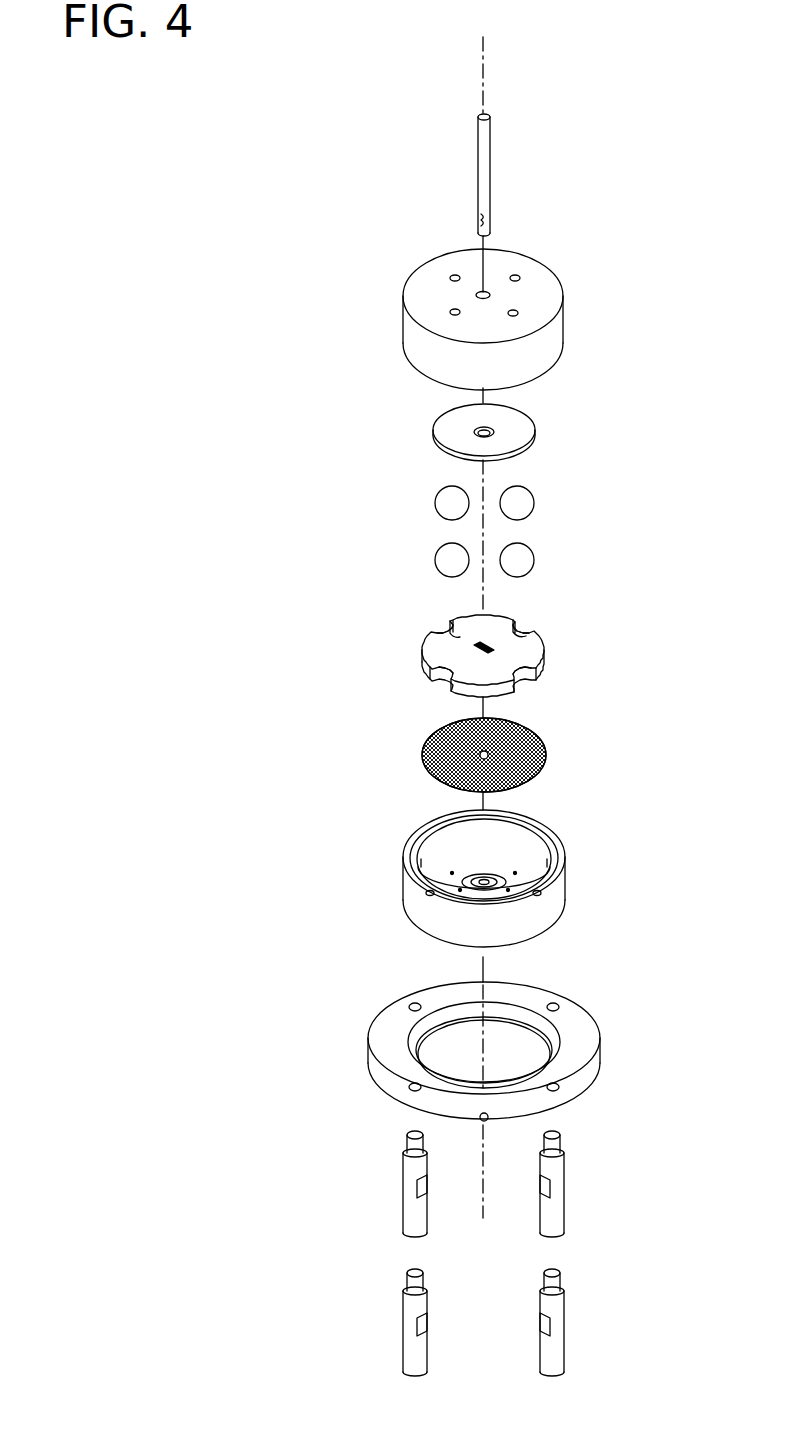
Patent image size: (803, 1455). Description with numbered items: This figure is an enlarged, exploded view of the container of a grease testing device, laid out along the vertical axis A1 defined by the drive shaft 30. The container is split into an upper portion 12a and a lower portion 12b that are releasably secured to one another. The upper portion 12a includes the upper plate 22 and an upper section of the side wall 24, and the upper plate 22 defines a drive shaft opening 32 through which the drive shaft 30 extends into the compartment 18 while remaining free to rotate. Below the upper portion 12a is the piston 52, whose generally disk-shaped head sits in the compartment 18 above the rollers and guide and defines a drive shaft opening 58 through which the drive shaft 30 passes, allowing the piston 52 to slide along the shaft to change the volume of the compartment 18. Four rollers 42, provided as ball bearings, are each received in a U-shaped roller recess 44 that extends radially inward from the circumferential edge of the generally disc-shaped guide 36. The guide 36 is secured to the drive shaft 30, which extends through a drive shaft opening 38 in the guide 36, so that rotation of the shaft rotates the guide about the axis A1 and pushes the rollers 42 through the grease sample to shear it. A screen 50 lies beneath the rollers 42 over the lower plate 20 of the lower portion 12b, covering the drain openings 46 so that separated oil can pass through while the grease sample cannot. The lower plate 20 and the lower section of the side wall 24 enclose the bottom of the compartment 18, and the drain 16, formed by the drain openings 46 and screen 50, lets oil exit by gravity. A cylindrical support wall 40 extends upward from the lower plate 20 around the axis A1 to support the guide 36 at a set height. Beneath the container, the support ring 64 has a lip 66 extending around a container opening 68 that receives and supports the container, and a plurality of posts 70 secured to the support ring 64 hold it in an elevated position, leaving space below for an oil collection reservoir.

The axis A1 is at (484, 611).
The drive shaft 30 is at (487, 146).
The upper portion 12a is at (575, 301).
The upper plate 22 is at (513, 262).
The drive shaft opening 32 is at (482, 290).
The side wall 24 is at (555, 347).
The piston 52 is at (432, 424).
The drive shaft opening 58 is at (486, 430).
The rollers 42 is at (440, 496).
The guide 36 is at (537, 647).
The roller recesses 44 is at (447, 637).
The drive shaft opening 38 is at (484, 646).
The screen 50 is at (552, 742).
The lower portion 12b is at (571, 898).
The drain openings 46 is at (455, 875).
The lower plate 20 is at (443, 873).
The compartment 18 is at (478, 850).
The drain 16 is at (515, 870).
The support wall 40 is at (487, 880).
The support ring 64 is at (582, 1043).
The lip 66 is at (522, 1022).
The container opening 68 is at (522, 1071).
The posts 70 is at (562, 1163).